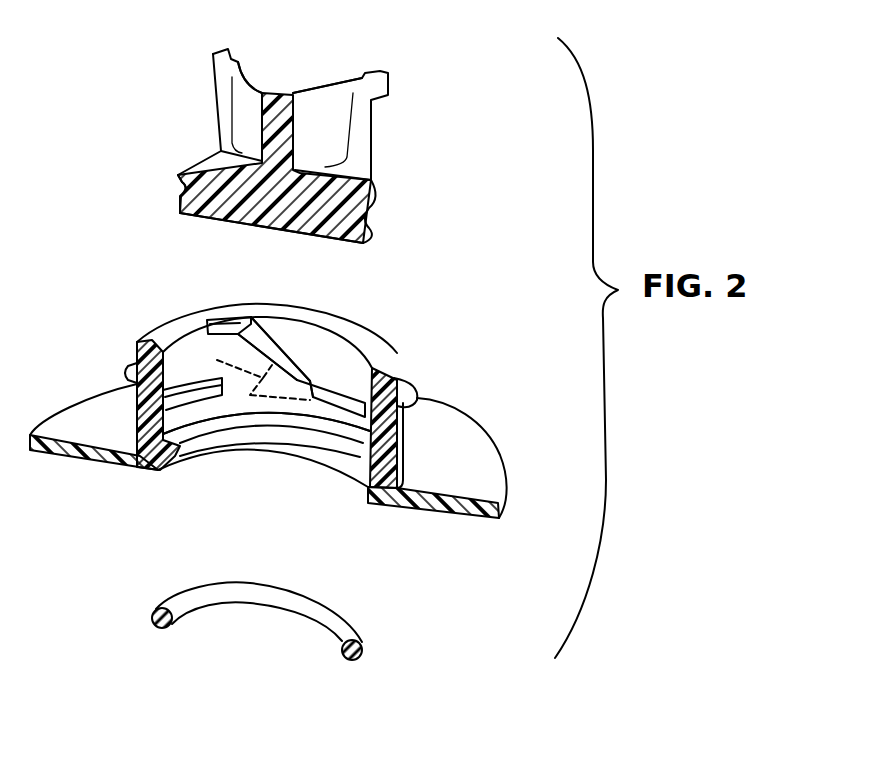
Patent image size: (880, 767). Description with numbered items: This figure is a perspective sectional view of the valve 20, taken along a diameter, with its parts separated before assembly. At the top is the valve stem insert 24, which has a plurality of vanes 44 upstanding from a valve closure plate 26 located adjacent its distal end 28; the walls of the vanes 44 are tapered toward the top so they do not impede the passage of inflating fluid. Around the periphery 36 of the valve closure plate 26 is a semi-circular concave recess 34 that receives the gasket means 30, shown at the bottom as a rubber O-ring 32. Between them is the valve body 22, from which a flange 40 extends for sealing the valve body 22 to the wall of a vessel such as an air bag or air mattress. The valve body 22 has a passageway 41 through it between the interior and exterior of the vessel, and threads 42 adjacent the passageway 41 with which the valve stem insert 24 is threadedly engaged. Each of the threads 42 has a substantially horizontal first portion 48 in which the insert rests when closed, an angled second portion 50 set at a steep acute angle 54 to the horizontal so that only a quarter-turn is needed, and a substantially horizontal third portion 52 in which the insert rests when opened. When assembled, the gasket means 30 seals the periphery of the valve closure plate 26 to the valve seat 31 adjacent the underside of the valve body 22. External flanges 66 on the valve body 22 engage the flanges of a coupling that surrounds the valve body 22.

The valve 20 is at (175, 121).
The valve stem insert 24 is at (360, 145).
The valve closure plate 26 is at (288, 225).
The distal end 28 is at (245, 227).
The semi-circular concave recess 34 is at (182, 189).
The periphery 36 is at (375, 240).
The vanes 44 is at (313, 84).
The valve body 22 is at (419, 363).
The valve seat 31 is at (177, 459).
The flange 40 is at (480, 447).
The passageway 41 is at (220, 462).
The threads 42 is at (297, 345).
The first portion 48 is at (223, 320).
The second portion 50 is at (267, 338).
The third portion 52 is at (347, 403).
The acute angle 54 is at (246, 375).
The external flanges 66 is at (128, 371).
The gasket means 30 is at (273, 616).
The O-ring 32 is at (192, 596).